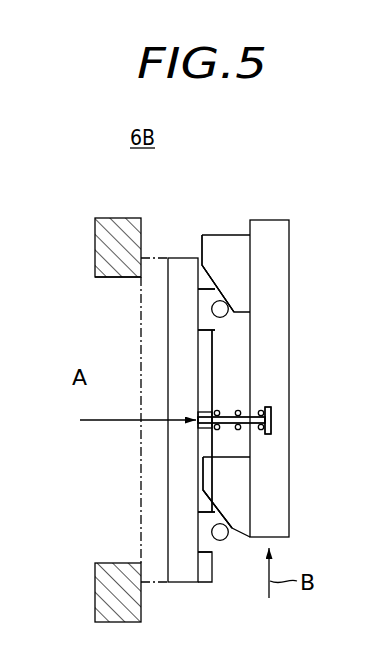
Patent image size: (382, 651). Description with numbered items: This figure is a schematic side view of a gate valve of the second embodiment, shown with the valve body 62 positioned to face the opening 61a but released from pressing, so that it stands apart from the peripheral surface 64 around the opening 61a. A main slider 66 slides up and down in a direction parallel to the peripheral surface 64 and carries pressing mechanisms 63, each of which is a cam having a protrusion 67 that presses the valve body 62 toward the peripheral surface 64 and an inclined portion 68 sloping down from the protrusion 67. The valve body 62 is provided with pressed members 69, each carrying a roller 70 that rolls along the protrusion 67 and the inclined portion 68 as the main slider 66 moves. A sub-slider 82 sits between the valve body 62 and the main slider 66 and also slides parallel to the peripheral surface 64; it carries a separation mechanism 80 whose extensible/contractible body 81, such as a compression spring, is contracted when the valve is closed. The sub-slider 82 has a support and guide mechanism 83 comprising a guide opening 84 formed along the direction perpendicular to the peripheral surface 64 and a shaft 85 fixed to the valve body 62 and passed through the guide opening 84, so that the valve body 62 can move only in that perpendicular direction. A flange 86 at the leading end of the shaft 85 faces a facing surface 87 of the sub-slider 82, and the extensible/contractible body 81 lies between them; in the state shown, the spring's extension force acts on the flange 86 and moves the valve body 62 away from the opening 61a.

The opening 61a is at (108, 279).
The valve body 62 is at (185, 578).
The pressing mechanism 63 is at (234, 228).
The peripheral surface 64 is at (92, 231).
The main slider 66 is at (289, 307).
The protrusion 67 is at (199, 243).
The inclined portion 68 is at (243, 305).
The pressed member 69 is at (226, 322).
The roller 70 is at (212, 311).
The separation mechanism 80 is at (273, 409).
The extensible/contractible body 81 is at (238, 410).
The sub-slider 82 is at (205, 578).
The support and guide mechanism 83 is at (198, 412).
The guide opening 84 is at (198, 430).
The shaft 85 is at (240, 432).
The flange 86 is at (271, 427).
The facing surface 87 is at (217, 364).